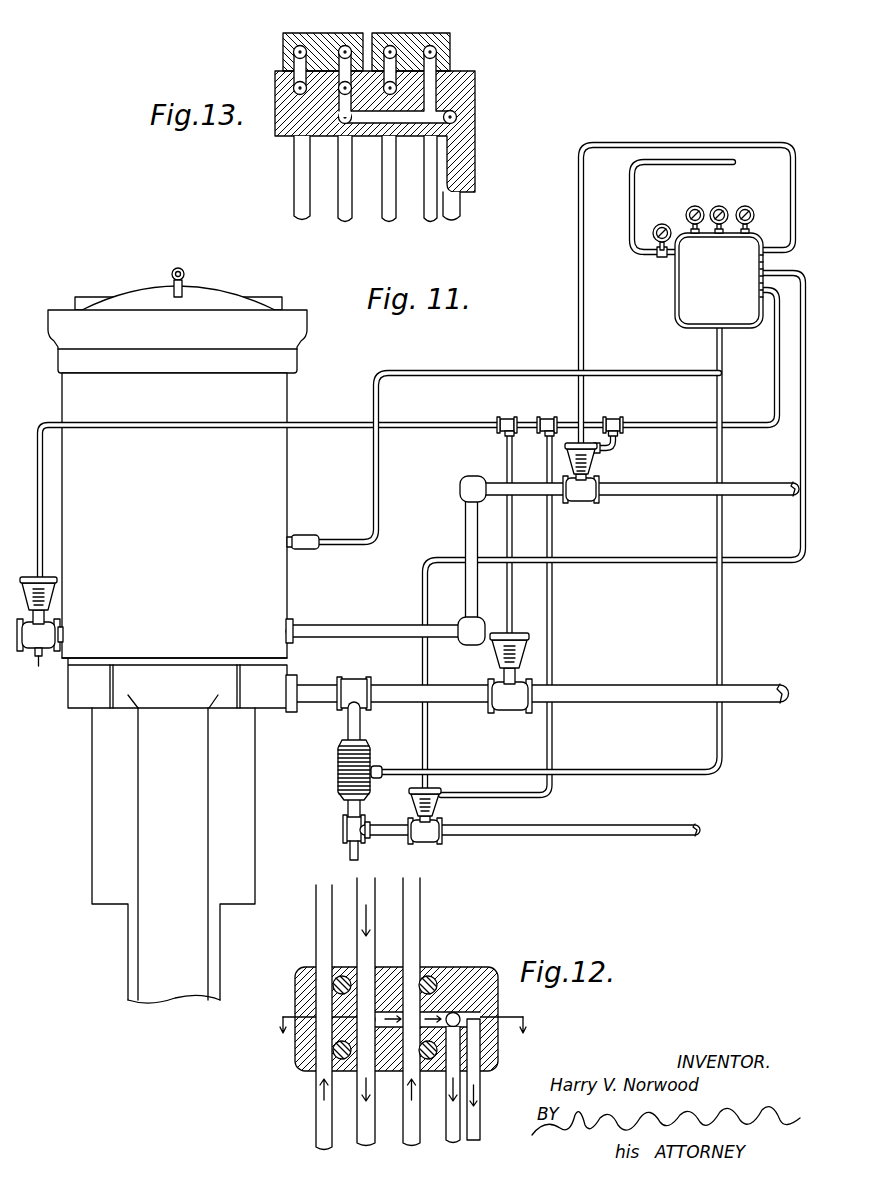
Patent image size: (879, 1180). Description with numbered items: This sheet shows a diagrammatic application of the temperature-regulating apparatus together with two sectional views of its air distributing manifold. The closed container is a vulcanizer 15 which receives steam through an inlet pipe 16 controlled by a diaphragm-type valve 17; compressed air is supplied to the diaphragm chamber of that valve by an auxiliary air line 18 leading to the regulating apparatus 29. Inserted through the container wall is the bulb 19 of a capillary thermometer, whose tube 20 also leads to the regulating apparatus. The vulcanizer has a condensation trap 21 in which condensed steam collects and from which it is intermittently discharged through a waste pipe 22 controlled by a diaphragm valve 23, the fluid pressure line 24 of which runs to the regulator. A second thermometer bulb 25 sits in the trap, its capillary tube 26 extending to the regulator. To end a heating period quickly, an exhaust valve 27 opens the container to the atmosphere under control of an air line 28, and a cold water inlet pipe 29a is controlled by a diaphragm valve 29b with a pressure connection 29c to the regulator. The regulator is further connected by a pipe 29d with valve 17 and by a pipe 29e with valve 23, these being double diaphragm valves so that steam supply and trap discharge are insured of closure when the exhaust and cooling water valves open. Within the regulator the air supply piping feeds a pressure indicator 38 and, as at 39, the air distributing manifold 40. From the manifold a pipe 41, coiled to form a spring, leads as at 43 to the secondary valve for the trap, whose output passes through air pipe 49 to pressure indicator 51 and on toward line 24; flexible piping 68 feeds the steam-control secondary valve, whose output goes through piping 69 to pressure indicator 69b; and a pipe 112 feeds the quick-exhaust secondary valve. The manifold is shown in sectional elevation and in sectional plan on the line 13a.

In FIG. 11, the vulcanizer 15 is at (224, 296).
In FIG. 11, the inlet pipe 16 is at (660, 483).
In FIG. 11, the valve 17 is at (598, 466).
In FIG. 11, the auxiliary air line 18 is at (578, 309).
In FIG. 11, the bulb 19 is at (298, 535).
In FIG. 11, the tube 20 is at (481, 369).
In FIG. 11, the condensation trap 21 is at (338, 770).
In FIG. 11, the waste pipe 22 is at (505, 838).
In FIG. 11, the diaphragm valve 23 is at (441, 808).
In FIG. 11, the fluid pressure line 24 is at (789, 275).
In FIG. 11, the thermometer bulb 25 is at (378, 766).
In FIG. 11, the capillary tube 26 is at (655, 770).
In FIG. 11, the exhaust valve 27 is at (490, 656).
In FIG. 11, the air line 28 is at (549, 524).
In FIG. 11, the regulating apparatus 29 is at (675, 298).
In FIG. 11, the cold water inlet pipe 29a is at (20, 650).
In FIG. 11, the diaphragm valve 29b is at (39, 660).
In FIG. 11, the pressure connection 29c is at (165, 428).
In FIG. 11, the pipe 29d is at (620, 444).
In FIG. 11, the pipe 29e is at (552, 632).
In FIG. 11, the pressure indicator 38 is at (690, 208).
In FIG. 11, the pressure indicator 51 is at (721, 207).
In FIG. 11, the pressure indicator 69b is at (753, 217).
In FIG. 12, the piping 39 is at (370, 892).
In FIG. 13, the air distributing manifold 40 is at (478, 84).
In FIG. 12, the air distributing manifold 40 is at (465, 967).
In FIG. 12, the pipe 41 is at (363, 1132).
In FIG. 13, the pipe 43 is at (341, 210).
In FIG. 13, the air pipe 49 is at (296, 86).
In FIG. 12, the air pipe 49 is at (322, 933).
In FIG. 13, the flexible piping 68 is at (432, 50).
In FIG. 12, the flexible piping 68 is at (452, 1132).
In FIG. 13, the piping 69 is at (390, 50).
In FIG. 12, the piping 69 is at (414, 932).
In FIG. 13, the pipe 112 is at (456, 117).
In FIG. 12, the pipe 112 is at (480, 1120).
In FIG. 12, the section line 13a is at (404, 1020).